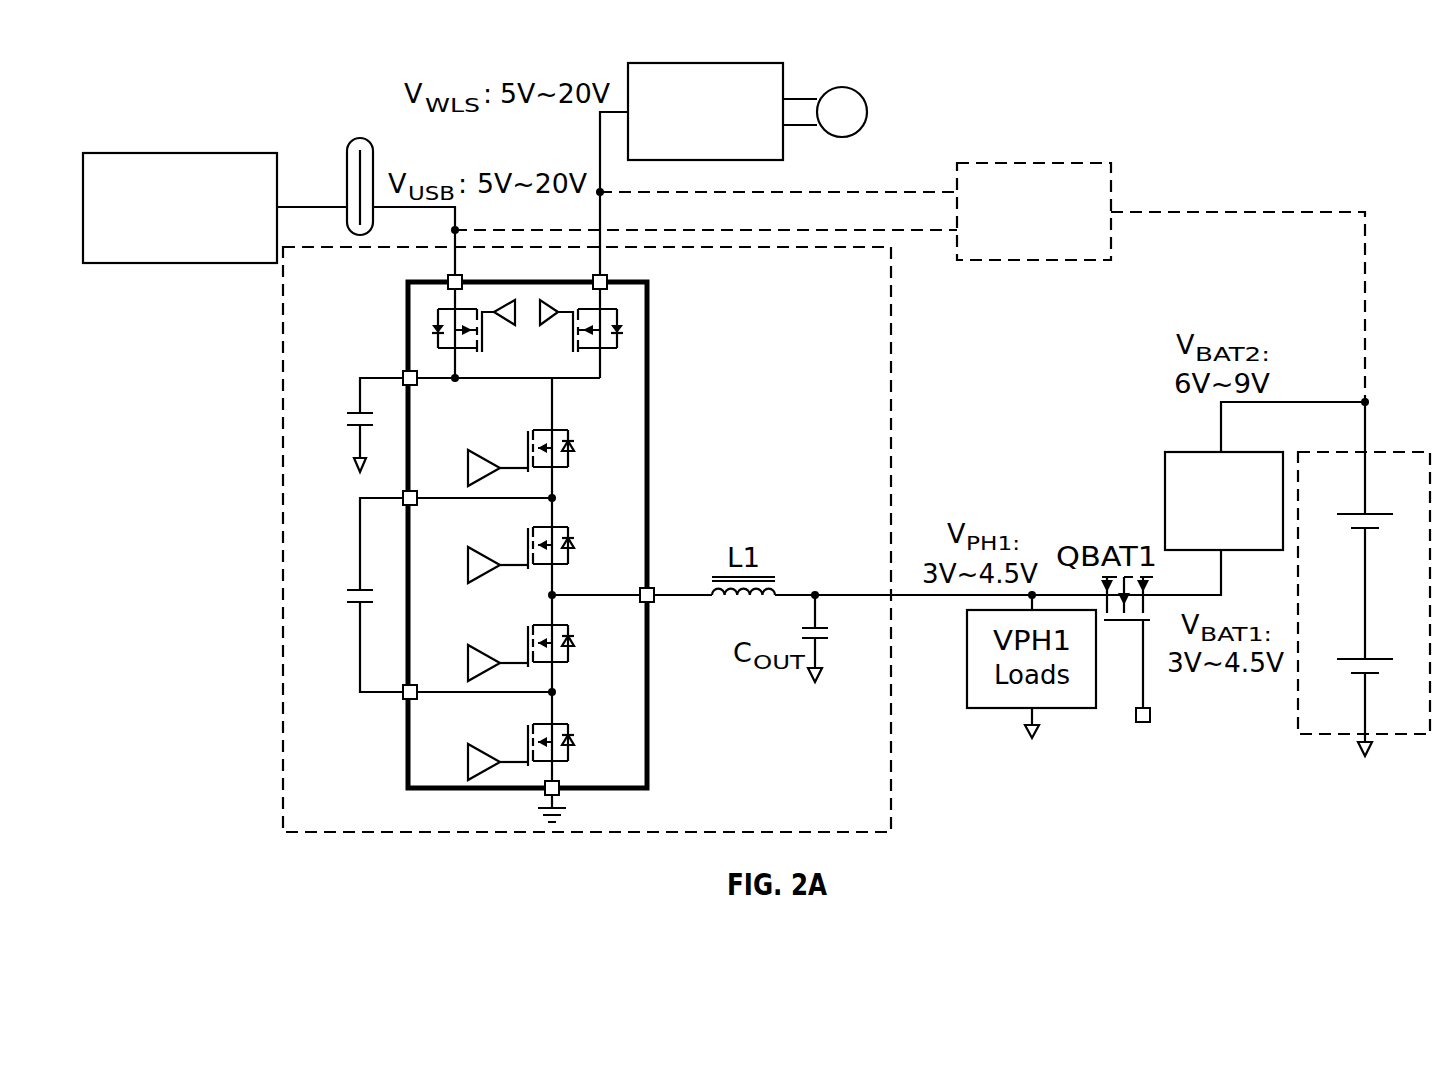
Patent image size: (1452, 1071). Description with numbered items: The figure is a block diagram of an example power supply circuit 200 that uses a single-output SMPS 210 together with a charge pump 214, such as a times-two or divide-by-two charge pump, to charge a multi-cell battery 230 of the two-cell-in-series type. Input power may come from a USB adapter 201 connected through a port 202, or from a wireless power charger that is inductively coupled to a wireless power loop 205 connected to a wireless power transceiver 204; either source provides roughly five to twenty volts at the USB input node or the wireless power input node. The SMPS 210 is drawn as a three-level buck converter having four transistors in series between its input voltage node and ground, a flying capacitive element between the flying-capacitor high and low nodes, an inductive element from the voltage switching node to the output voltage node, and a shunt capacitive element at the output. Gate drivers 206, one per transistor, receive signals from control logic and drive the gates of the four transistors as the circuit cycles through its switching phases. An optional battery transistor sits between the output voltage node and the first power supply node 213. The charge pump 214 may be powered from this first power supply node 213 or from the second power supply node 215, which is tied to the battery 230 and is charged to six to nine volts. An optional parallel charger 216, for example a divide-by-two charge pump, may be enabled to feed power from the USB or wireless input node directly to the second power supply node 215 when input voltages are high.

The power supply circuit 200 is at (240, 68).
The USB adapter 201 is at (154, 152).
The port 202 is at (357, 138).
The wireless power transceiver 204 is at (700, 62).
The wireless power loop 205 is at (838, 86).
The gate drivers 206 is at (465, 467).
The single-output SMPS 210 is at (892, 390).
The first power supply node 213 is at (1222, 581).
The charge pump 214 is at (1230, 451).
The second power supply node 215 is at (1291, 401).
The parallel charger 216 is at (1040, 162).
The multi-cell battery 230 is at (1380, 451).